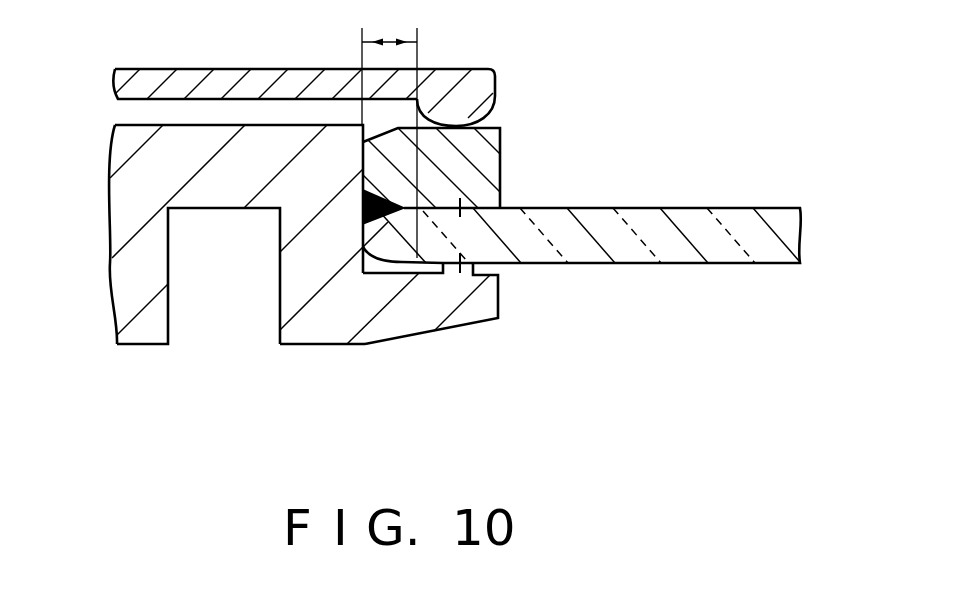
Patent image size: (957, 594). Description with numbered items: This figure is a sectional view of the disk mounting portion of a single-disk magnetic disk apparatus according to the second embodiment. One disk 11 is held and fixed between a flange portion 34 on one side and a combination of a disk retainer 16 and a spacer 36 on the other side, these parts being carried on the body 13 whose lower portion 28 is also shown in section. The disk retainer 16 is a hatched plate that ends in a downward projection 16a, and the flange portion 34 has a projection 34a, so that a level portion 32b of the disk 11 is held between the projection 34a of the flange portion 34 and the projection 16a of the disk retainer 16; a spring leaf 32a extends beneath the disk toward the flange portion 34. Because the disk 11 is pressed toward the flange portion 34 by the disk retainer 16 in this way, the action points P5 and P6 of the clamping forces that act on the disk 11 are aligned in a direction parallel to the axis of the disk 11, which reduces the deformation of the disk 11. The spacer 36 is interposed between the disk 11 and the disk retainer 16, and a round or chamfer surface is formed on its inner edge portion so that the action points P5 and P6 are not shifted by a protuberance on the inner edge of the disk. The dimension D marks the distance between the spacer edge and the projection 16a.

The disk 11 is at (730, 208).
The body 13 is at (108, 240).
The disk retainer 16 is at (261, 68).
The projection of the disk retainer 16a is at (478, 108).
The lower body portion 28 is at (312, 346).
The spring leaf 32a is at (368, 275).
The level portion of the disk 32b is at (652, 208).
The flange portion 34 is at (453, 328).
The projection of the flange portion 34a is at (466, 272).
The spacer 36 is at (500, 160).
The action point P5 is at (463, 208).
The action point P6 is at (463, 258).
The distance D is at (389, 134).